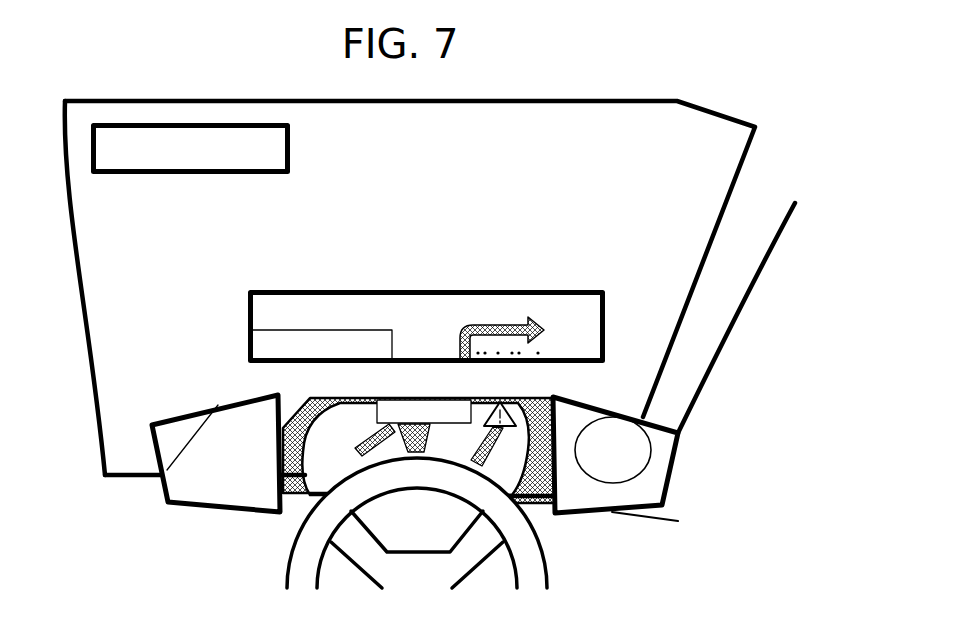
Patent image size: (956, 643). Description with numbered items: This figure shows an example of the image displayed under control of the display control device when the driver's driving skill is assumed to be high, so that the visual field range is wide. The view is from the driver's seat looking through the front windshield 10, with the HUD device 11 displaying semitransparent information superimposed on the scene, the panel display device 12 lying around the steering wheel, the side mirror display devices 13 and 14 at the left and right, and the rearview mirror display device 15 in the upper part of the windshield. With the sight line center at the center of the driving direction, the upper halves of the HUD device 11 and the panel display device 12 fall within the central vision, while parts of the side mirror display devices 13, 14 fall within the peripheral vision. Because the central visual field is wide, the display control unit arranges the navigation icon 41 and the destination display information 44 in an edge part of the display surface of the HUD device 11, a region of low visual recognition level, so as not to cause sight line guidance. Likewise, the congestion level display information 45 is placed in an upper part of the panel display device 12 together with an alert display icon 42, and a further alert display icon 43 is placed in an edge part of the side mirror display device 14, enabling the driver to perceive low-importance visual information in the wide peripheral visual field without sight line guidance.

The front windshield 10 is at (723, 168).
The HUD device 11 is at (395, 300).
The panel display device 12 is at (300, 405).
The side mirror display device 13 is at (195, 420).
The side mirror display device 14 is at (680, 430).
The rearview mirror display device 15 is at (258, 161).
The navigation icon 41 is at (483, 320).
The alert display icon 42 is at (470, 398).
The alert display icon 43 is at (615, 412).
The destination display information 44 is at (302, 330).
The congestion level display information 45 is at (384, 399).